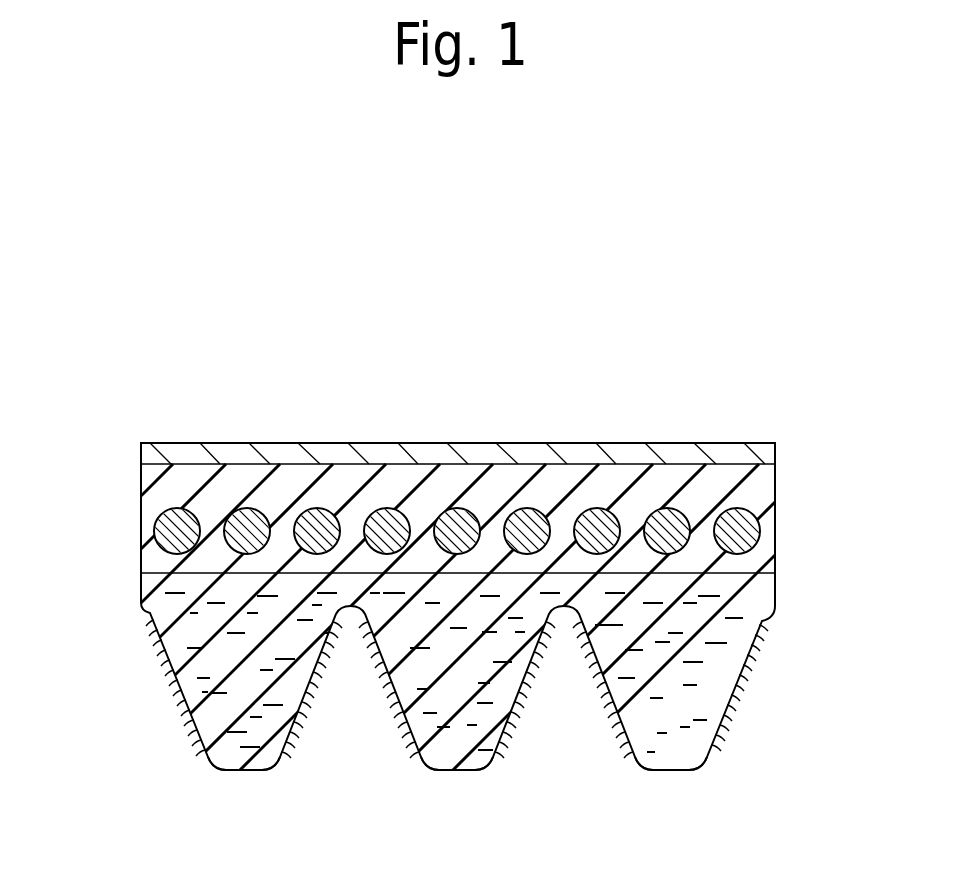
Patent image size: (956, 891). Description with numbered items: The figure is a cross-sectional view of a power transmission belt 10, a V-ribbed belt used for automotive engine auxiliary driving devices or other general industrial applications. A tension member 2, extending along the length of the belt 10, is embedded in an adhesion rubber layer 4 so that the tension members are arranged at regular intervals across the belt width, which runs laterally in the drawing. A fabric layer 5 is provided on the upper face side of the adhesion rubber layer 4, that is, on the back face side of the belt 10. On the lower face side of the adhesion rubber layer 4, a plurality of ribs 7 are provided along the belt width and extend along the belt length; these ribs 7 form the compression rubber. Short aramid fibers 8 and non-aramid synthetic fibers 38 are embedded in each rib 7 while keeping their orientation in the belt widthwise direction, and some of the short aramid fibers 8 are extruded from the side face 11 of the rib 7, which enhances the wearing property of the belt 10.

The power transmission belt 10 is at (478, 321).
The fabric layer 5 is at (775, 455).
The adhesion rubber layer 4 is at (775, 480).
The tension member 2 is at (760, 531).
The rib 7 is at (245, 770).
The short aramid fiber 8 is at (722, 644).
The non-aramid synthetic fiber 38 is at (160, 627).
The side face 11 is at (603, 705).